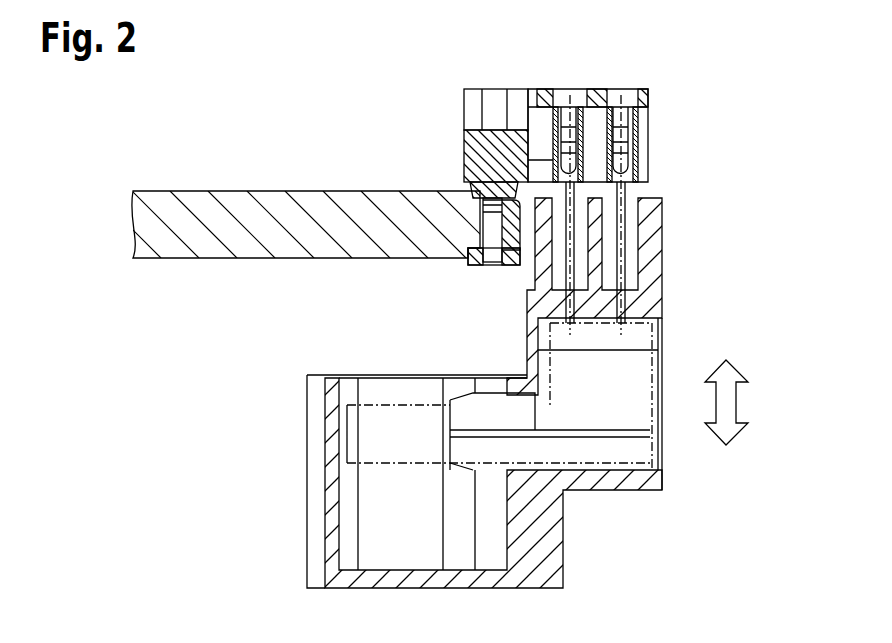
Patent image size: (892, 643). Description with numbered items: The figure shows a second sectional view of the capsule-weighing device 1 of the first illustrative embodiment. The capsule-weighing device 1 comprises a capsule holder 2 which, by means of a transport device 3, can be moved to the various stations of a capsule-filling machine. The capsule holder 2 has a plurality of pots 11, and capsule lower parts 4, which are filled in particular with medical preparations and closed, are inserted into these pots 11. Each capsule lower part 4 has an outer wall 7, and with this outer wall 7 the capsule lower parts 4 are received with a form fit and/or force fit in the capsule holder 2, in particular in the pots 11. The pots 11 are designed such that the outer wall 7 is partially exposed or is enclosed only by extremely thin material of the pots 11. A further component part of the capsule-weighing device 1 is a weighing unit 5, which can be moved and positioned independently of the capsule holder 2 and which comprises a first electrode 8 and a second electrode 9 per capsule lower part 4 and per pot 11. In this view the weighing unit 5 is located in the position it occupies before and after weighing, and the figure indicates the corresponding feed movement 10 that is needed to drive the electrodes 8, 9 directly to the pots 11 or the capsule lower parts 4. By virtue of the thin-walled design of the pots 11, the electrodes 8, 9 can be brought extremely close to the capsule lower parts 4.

The capsule-weighing device 1 is at (209, 421).
The capsule holder 2 is at (476, 158).
The transport device 3 is at (226, 200).
The capsule lower parts 4 is at (563, 123).
The weighing unit 5 is at (652, 300).
The outer wall 7 is at (628, 173).
The first electrode 8 is at (655, 210).
The second electrode 9 is at (623, 230).
The feed movement 10 is at (737, 400).
The pots 11 is at (562, 123).